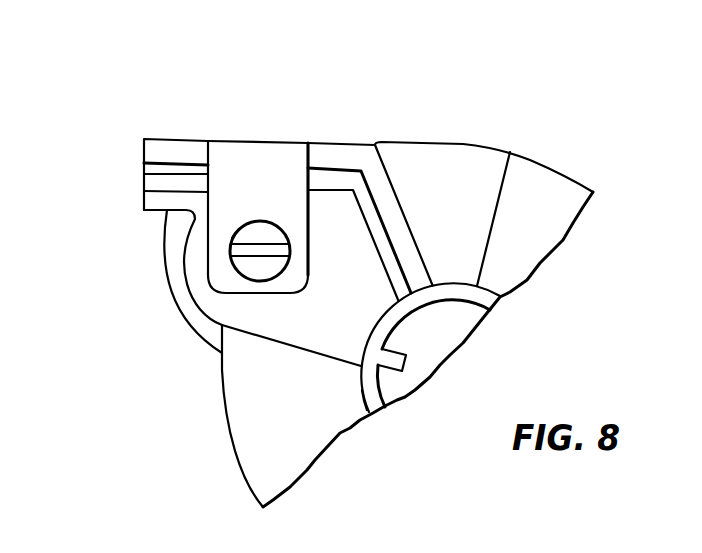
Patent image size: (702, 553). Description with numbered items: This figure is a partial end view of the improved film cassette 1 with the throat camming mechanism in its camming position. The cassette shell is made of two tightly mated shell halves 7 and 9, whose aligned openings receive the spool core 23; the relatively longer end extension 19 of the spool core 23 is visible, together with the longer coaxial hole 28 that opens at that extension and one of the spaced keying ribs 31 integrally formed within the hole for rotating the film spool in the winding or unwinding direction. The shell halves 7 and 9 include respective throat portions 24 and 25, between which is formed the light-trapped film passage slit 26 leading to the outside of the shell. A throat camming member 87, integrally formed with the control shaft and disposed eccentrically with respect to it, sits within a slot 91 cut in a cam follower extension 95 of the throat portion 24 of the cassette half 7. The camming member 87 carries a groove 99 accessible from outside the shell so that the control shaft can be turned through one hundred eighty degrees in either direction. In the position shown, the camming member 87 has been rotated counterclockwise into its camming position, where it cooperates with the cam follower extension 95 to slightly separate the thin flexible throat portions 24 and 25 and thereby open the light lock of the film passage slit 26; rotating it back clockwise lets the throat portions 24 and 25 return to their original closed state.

The film cassette 1 is at (224, 126).
The cassette shell half 7 is at (523, 150).
The cassette shell half 9 is at (232, 452).
The longer end extension 19 is at (380, 410).
The spool core 23 is at (359, 401).
The throat portion 24 is at (164, 147).
The throat portion 25 is at (152, 201).
The film passage slit 26 is at (146, 170).
The longer coaxial hole 28 is at (463, 323).
The keying rib 31 is at (407, 363).
The throat camming member 87 is at (275, 238).
The slot 91 is at (240, 236).
The cam follower extension 95 is at (273, 170).
The groove 99 is at (288, 246).